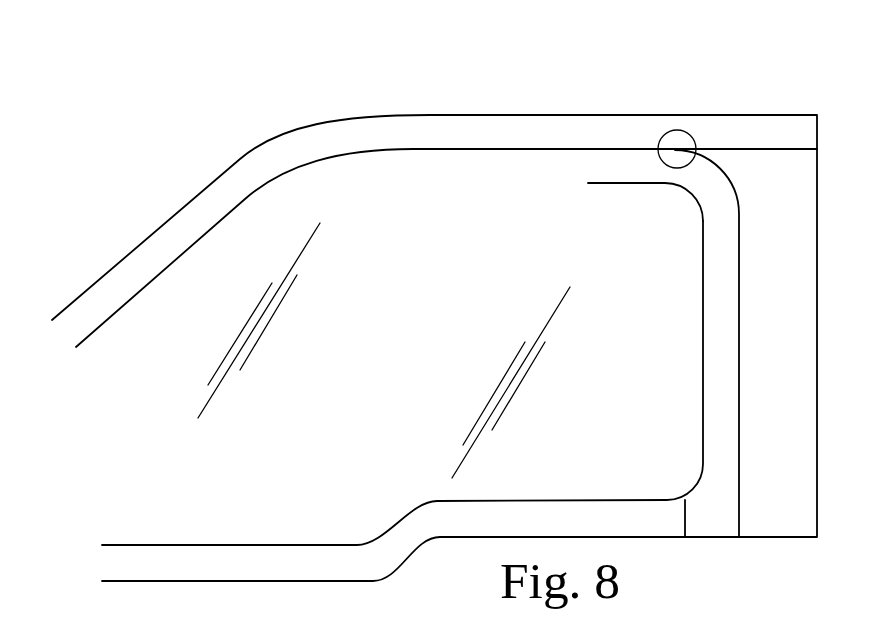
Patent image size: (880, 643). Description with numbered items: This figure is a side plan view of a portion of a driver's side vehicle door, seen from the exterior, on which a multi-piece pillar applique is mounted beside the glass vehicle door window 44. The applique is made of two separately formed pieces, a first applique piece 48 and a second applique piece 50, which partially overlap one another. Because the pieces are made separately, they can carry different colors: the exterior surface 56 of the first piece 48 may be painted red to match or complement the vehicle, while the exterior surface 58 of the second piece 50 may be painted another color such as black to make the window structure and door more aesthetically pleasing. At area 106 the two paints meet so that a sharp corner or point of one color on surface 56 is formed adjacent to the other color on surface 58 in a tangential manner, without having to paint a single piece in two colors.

The glass vehicle door window 44 is at (368, 187).
The first applique piece 48 is at (768, 375).
The second applique piece 50 is at (725, 301).
The exterior surface of first piece 56 is at (778, 172).
The exterior surface of second piece 58 is at (718, 197).
The area 106 is at (678, 130).